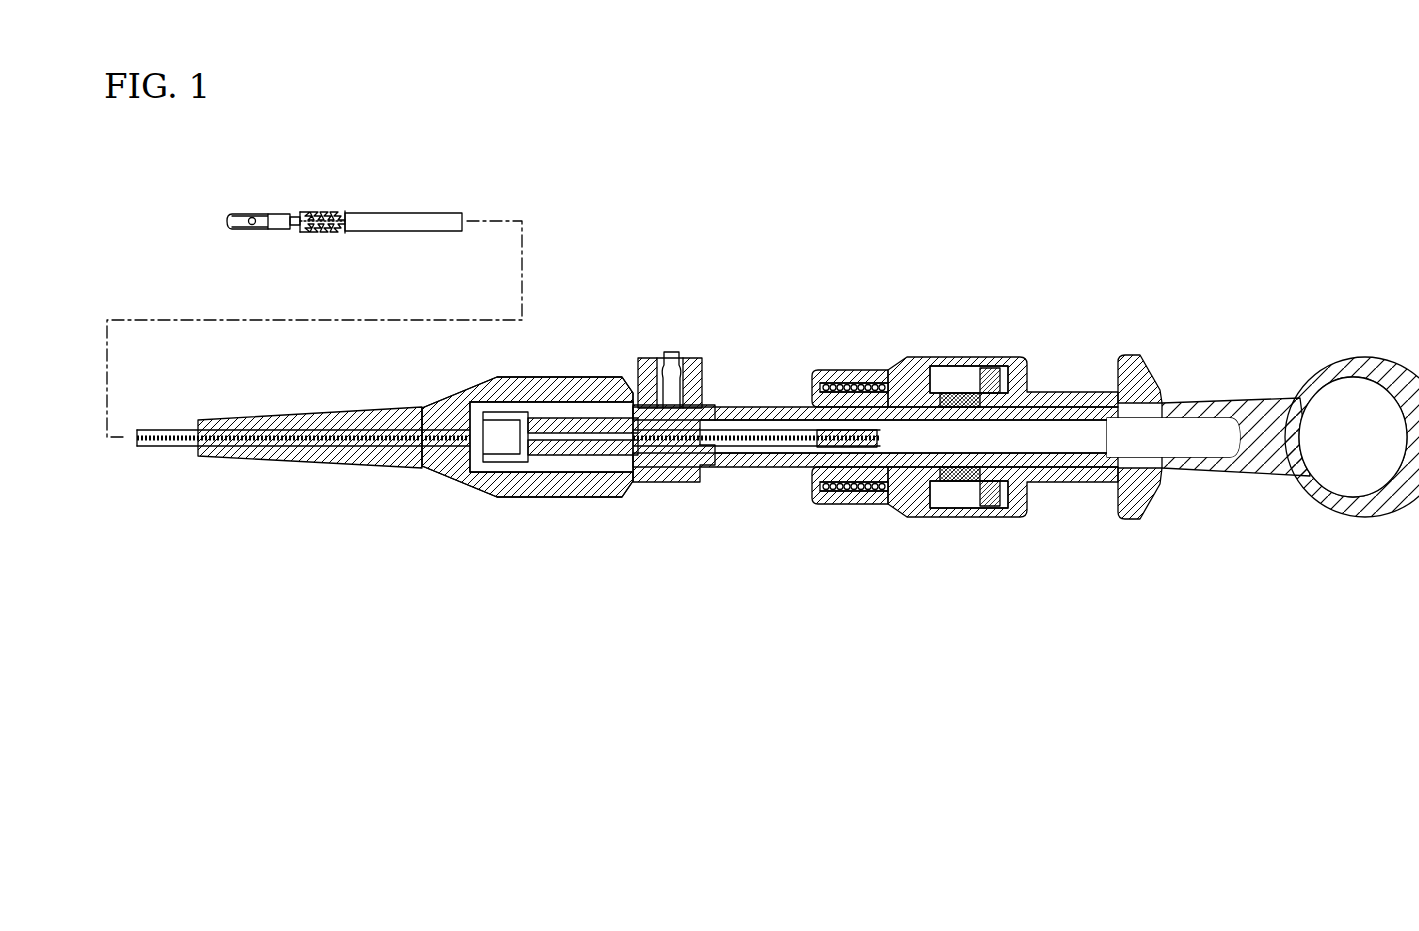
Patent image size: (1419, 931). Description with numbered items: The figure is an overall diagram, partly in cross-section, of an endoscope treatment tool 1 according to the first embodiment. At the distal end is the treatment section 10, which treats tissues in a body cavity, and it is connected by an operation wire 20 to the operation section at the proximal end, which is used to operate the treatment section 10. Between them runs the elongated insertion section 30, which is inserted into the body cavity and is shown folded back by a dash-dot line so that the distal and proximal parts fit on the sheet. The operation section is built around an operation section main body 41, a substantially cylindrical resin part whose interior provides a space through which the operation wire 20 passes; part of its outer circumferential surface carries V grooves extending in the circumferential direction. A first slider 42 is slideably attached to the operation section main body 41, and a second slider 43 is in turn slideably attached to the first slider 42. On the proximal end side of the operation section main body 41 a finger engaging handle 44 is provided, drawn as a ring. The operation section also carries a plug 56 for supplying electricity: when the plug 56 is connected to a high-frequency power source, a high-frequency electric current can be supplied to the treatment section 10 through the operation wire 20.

The treatment tool 1 is at (1138, 262).
The treatment section 10 is at (285, 204).
The operation wire 20 is at (492, 456).
The insertion section 30 is at (420, 212).
The operation section main body 41 is at (742, 470).
The first slider 42 is at (810, 476).
The second slider 43 is at (1001, 527).
The finger engaging handle 44 is at (1357, 357).
The plug 56 is at (667, 352).